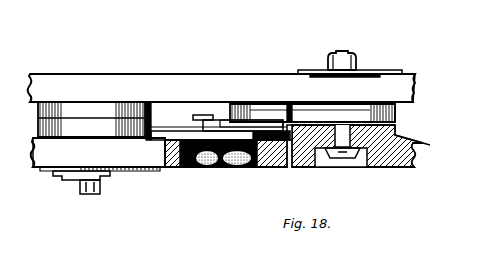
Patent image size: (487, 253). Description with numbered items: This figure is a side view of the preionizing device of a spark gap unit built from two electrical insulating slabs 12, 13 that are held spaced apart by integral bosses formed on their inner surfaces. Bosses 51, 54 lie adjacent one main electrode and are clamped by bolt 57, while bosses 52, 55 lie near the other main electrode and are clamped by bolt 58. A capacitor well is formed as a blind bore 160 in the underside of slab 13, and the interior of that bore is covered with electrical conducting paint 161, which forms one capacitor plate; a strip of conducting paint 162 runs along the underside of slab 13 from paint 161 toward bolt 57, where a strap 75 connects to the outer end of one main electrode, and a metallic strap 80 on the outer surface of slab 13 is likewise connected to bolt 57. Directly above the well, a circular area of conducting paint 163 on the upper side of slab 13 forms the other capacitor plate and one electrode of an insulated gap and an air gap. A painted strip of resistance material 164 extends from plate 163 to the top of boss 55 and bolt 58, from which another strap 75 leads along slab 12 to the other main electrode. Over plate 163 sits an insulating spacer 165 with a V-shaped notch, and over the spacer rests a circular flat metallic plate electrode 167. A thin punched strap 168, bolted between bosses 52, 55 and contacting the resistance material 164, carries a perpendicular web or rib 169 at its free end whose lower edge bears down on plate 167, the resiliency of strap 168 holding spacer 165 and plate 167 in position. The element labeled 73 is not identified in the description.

The insulating slab 12 is at (158, 78).
The insulating slab 13 is at (408, 169).
The strap 75 is at (408, 75).
The bar 73 is at (312, 72).
The rivet or bolt 58 is at (345, 53).
The boss 52 is at (335, 111).
The strip of electrical resistance material 164 is at (397, 110).
The boss 55 is at (422, 144).
The boss 51 is at (91, 119).
The boss 54 is at (91, 127).
The electrical conducting paint 163 is at (183, 132).
The strap 168 is at (247, 118).
The web or rib 169 is at (199, 115).
The flat metallic plate electrode element 167 is at (263, 124).
The electrical insulating material spacer 165 is at (223, 168).
The electrical conducting paint 161 is at (199, 168).
The blind bore 160 is at (243, 168).
The strip of electrical conducting paint 162 is at (148, 172).
The metallic strap 80 is at (60, 177).
The rivet or bolt 57 is at (88, 195).